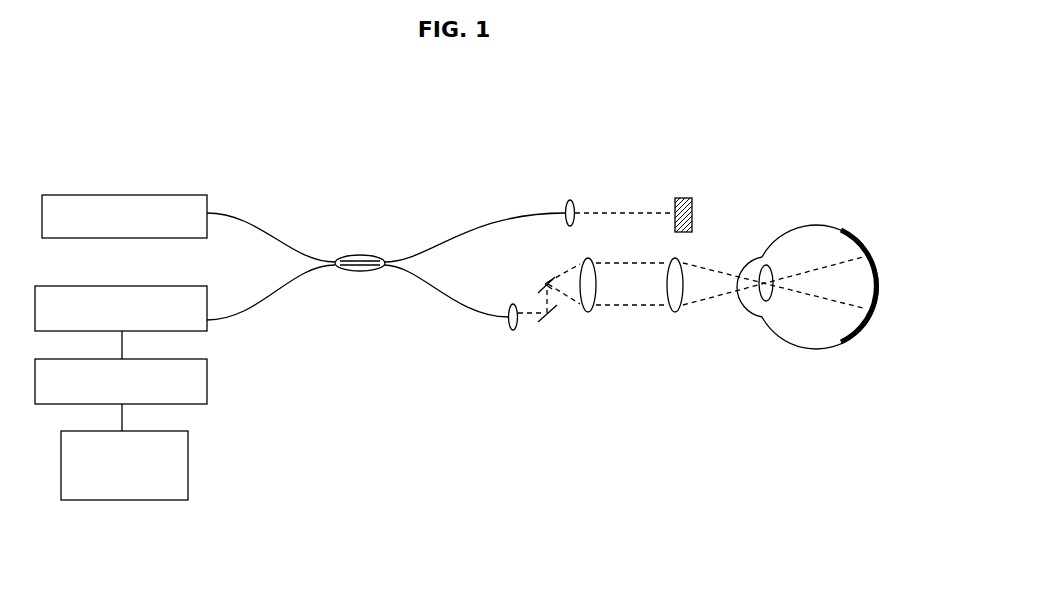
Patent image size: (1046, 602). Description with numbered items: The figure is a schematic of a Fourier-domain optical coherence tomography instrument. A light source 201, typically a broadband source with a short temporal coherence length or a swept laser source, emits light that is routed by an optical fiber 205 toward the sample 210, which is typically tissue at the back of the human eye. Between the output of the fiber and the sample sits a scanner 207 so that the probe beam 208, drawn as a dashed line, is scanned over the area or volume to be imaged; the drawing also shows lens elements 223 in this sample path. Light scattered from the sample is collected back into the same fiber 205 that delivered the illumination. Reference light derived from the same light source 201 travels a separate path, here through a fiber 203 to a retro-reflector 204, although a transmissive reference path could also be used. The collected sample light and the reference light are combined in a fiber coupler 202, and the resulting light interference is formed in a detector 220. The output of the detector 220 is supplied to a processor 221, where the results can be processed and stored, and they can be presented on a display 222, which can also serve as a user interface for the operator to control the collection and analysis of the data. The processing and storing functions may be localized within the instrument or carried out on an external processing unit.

The light source 201 is at (122, 192).
The detector 220 is at (215, 293).
The processor 221 is at (214, 383).
The display 222 is at (197, 467).
The fiber coupler 202 is at (350, 272).
The fiber 203 is at (477, 222).
The retro-reflector 204 is at (690, 183).
The optical fiber 205 is at (458, 315).
The scanner 207 is at (560, 323).
The lens 223 is at (677, 317).
The sample 210 is at (837, 222).
The probe beam 208 is at (812, 305).